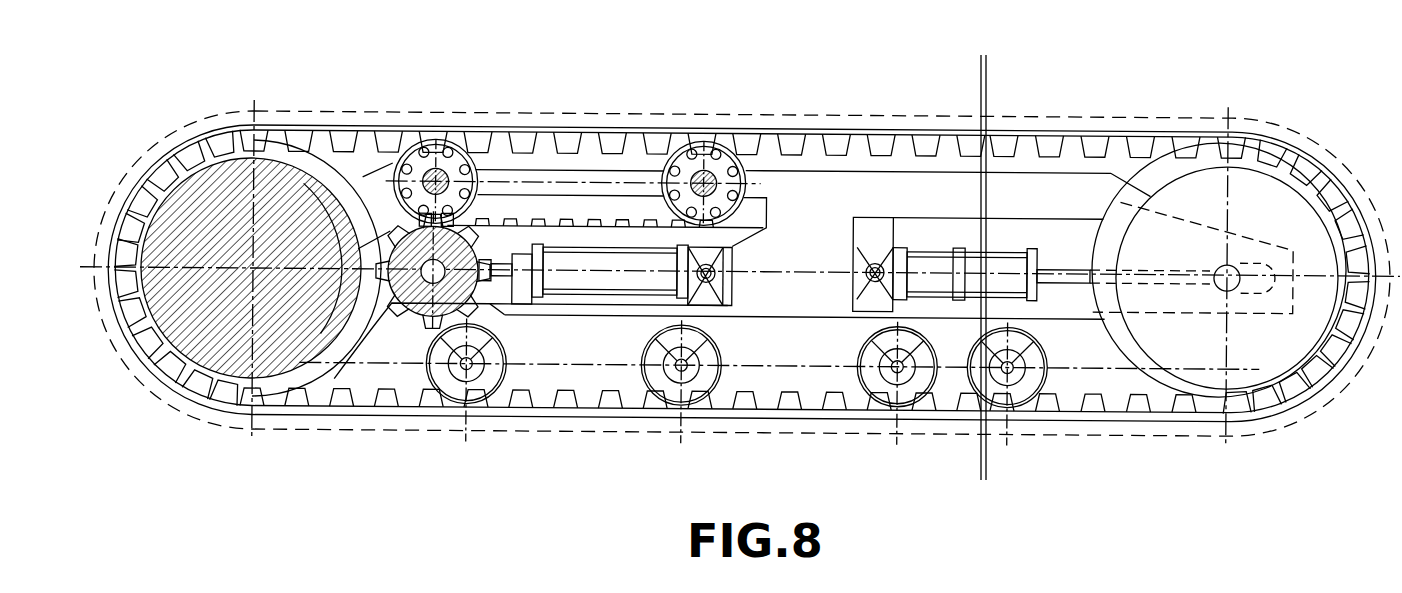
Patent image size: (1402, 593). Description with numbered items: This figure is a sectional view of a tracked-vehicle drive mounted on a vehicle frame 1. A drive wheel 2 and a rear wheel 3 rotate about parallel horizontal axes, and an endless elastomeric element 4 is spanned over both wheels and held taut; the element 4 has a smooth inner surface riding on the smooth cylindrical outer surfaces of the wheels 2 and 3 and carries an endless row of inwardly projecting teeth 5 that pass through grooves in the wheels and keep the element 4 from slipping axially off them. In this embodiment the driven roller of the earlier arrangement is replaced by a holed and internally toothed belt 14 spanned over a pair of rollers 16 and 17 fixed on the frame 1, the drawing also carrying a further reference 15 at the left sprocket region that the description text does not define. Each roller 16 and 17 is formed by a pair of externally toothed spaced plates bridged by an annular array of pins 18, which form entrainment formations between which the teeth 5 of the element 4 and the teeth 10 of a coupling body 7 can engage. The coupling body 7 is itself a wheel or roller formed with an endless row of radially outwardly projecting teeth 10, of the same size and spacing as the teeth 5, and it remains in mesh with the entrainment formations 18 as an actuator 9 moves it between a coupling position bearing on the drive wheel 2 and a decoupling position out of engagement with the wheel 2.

The vehicle frame 1 is at (858, 180).
The drive wheel 2 is at (165, 177).
The rear wheel 3 is at (1208, 353).
The endless elastomeric element 4 is at (1148, 128).
The inwardly projecting teeth 5 is at (1012, 145).
The coupling body 7 is at (402, 308).
The actuator 9 is at (600, 282).
The radially outwardly projecting teeth 10 is at (423, 318).
The holed and internally toothed belt 14 is at (587, 215).
The chain sprocket 15 is at (422, 145).
The roller 16 is at (513, 167).
The roller 17 is at (703, 161).
The pins 18 is at (736, 144).